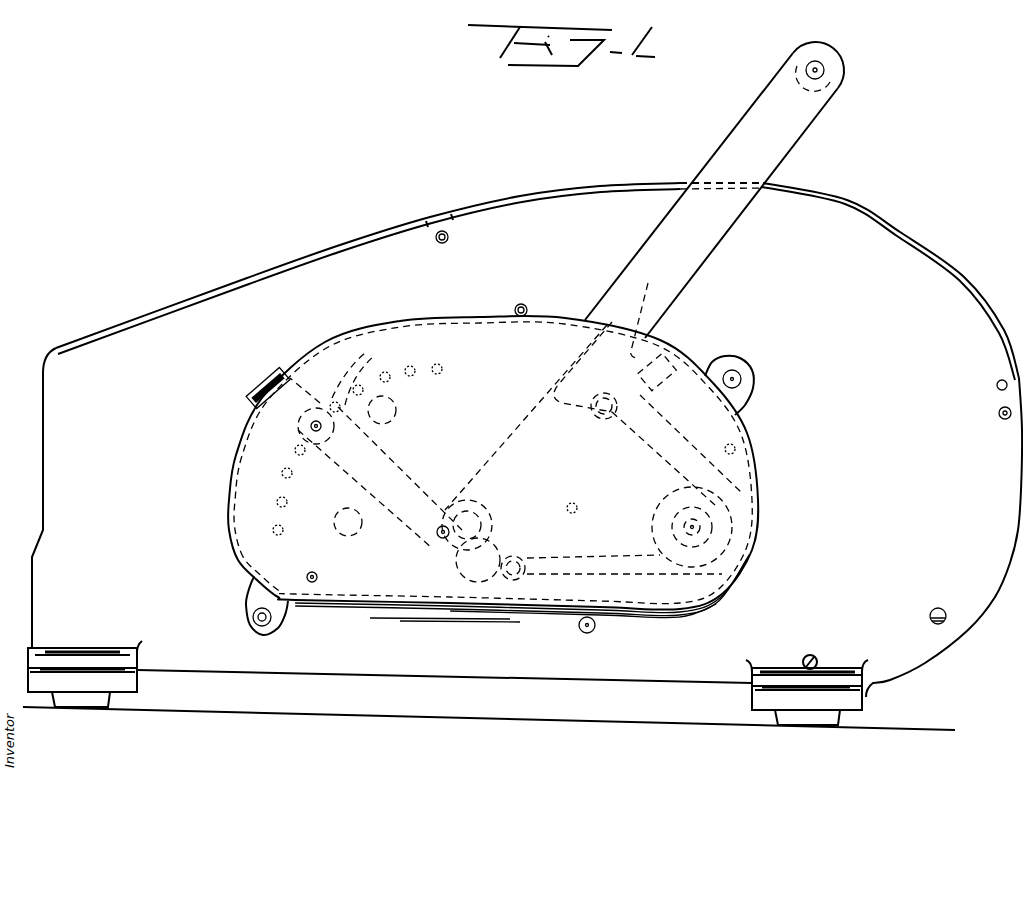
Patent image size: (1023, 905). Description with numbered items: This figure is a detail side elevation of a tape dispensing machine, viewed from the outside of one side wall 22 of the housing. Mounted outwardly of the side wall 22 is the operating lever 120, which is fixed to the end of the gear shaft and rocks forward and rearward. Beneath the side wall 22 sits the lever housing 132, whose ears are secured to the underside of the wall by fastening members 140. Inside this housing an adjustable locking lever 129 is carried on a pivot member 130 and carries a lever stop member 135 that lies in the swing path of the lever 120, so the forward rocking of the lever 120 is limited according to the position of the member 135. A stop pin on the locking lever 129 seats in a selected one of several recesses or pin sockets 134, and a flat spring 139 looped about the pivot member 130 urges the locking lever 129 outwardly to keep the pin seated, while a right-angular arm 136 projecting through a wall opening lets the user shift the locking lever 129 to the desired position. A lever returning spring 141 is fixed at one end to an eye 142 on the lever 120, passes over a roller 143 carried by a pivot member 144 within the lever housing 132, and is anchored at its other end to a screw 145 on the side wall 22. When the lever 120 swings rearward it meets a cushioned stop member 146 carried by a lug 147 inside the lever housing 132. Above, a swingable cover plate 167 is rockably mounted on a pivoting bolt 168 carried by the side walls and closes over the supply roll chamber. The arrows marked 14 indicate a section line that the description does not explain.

The section line 14 is at (258, 380).
The side wall 22 is at (587, 212).
The lever 120 is at (718, 243).
The adjustable locking lever 129 is at (380, 457).
The pivot member 130 is at (443, 532).
The lever housing 132 is at (228, 509).
The recesses or pin sockets 134 is at (352, 375).
The lever stop member 135 is at (246, 444).
The arm 136 is at (258, 386).
The flat spring 139 is at (256, 600).
The fastening members 140 is at (253, 622).
The lever returning spring 141 is at (668, 468).
The eye 142 is at (596, 430).
The roller 143 is at (624, 553).
The pivot member 144 is at (760, 521).
The screw 145 is at (527, 563).
The cushioned stop member 146 is at (615, 336).
The lug 147 is at (745, 418).
The swingable cover plate 167 is at (850, 207).
The pivoting bolt 168 is at (285, 262).